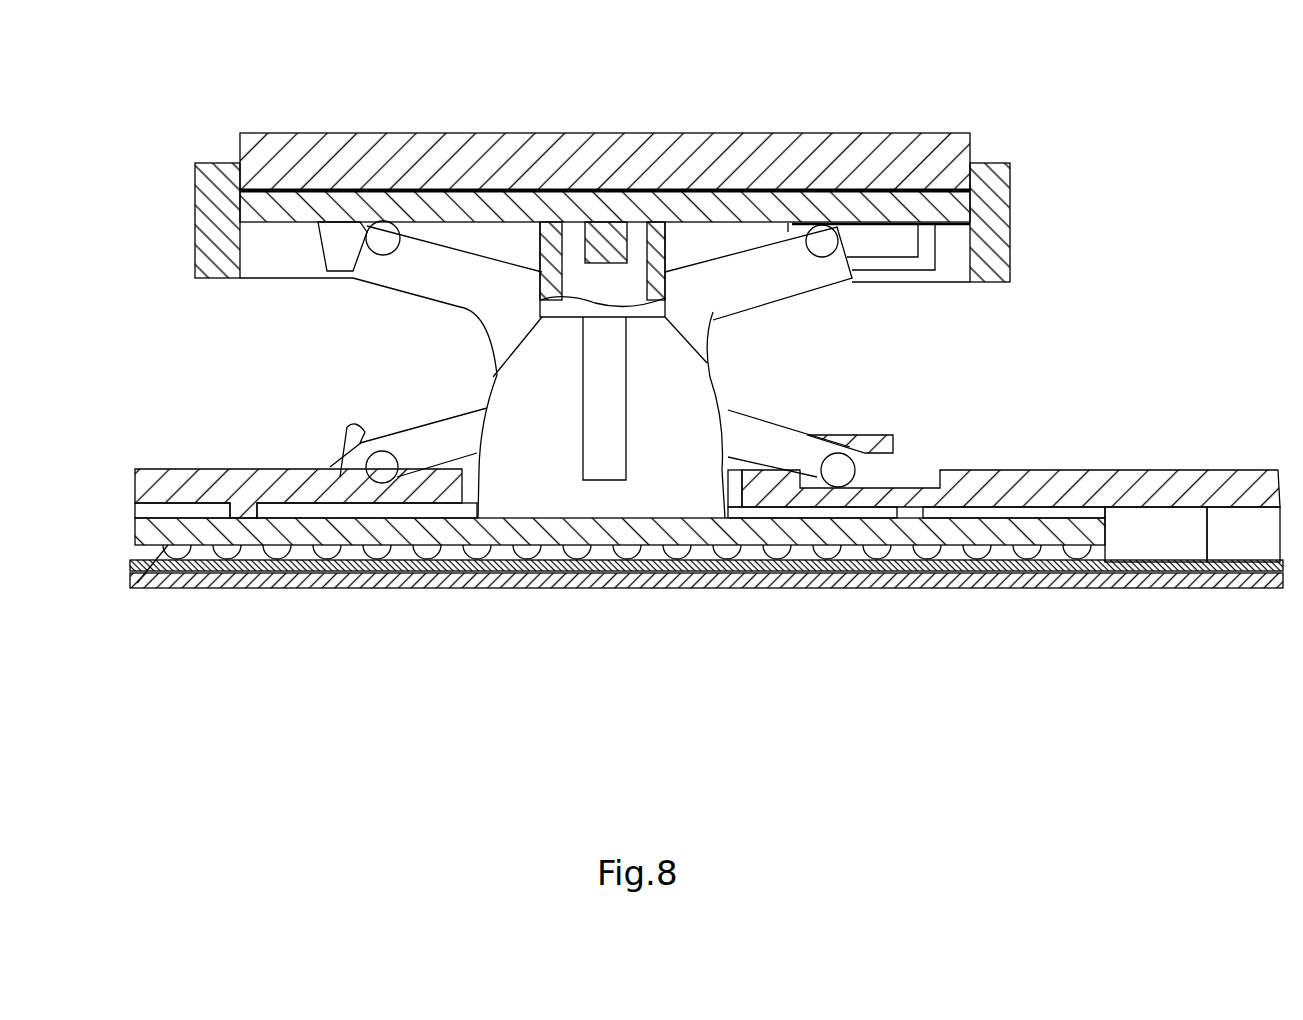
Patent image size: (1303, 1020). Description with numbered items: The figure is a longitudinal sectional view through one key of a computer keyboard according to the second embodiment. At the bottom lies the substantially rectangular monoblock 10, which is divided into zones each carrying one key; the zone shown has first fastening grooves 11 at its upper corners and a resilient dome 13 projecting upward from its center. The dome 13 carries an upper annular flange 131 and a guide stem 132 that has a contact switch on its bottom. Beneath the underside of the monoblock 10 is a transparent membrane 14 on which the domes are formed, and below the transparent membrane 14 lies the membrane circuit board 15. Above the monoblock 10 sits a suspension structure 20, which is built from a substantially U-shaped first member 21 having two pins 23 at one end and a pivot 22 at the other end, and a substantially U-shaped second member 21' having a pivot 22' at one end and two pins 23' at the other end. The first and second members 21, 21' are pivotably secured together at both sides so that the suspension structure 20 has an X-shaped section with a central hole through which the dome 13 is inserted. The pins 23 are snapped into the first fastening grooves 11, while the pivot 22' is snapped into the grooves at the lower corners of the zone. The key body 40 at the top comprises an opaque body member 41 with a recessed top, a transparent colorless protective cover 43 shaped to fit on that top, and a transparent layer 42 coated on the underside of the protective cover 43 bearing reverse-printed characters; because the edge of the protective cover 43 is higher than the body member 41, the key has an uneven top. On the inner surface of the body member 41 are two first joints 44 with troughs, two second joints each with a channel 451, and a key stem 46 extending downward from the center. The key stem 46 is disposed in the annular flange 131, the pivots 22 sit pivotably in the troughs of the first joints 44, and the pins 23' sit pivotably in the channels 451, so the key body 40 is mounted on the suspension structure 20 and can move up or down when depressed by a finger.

The monoblock 10 is at (162, 482).
The first fastening grooves 11 is at (887, 472).
The resilient dome 13 is at (517, 389).
The annular flange 131 is at (540, 257).
The guide stem 132 is at (618, 453).
The transparent membrane 14 is at (457, 533).
The membrane circuit board 15 is at (265, 570).
The suspension structure 20 is at (862, 338).
The first member 21 is at (810, 424).
The second member 21' is at (763, 289).
The pivot 22 is at (365, 167).
The pivot 22' is at (408, 545).
The pins 23 is at (835, 569).
The pins 23' is at (807, 168).
The key body 40 is at (200, 110).
The body member 41 is at (1000, 213).
The transparent layer 42 is at (443, 243).
The protective cover 43 is at (710, 153).
The first joints 44 is at (343, 237).
The channel 451 is at (905, 243).
The key stem 46 is at (617, 243).